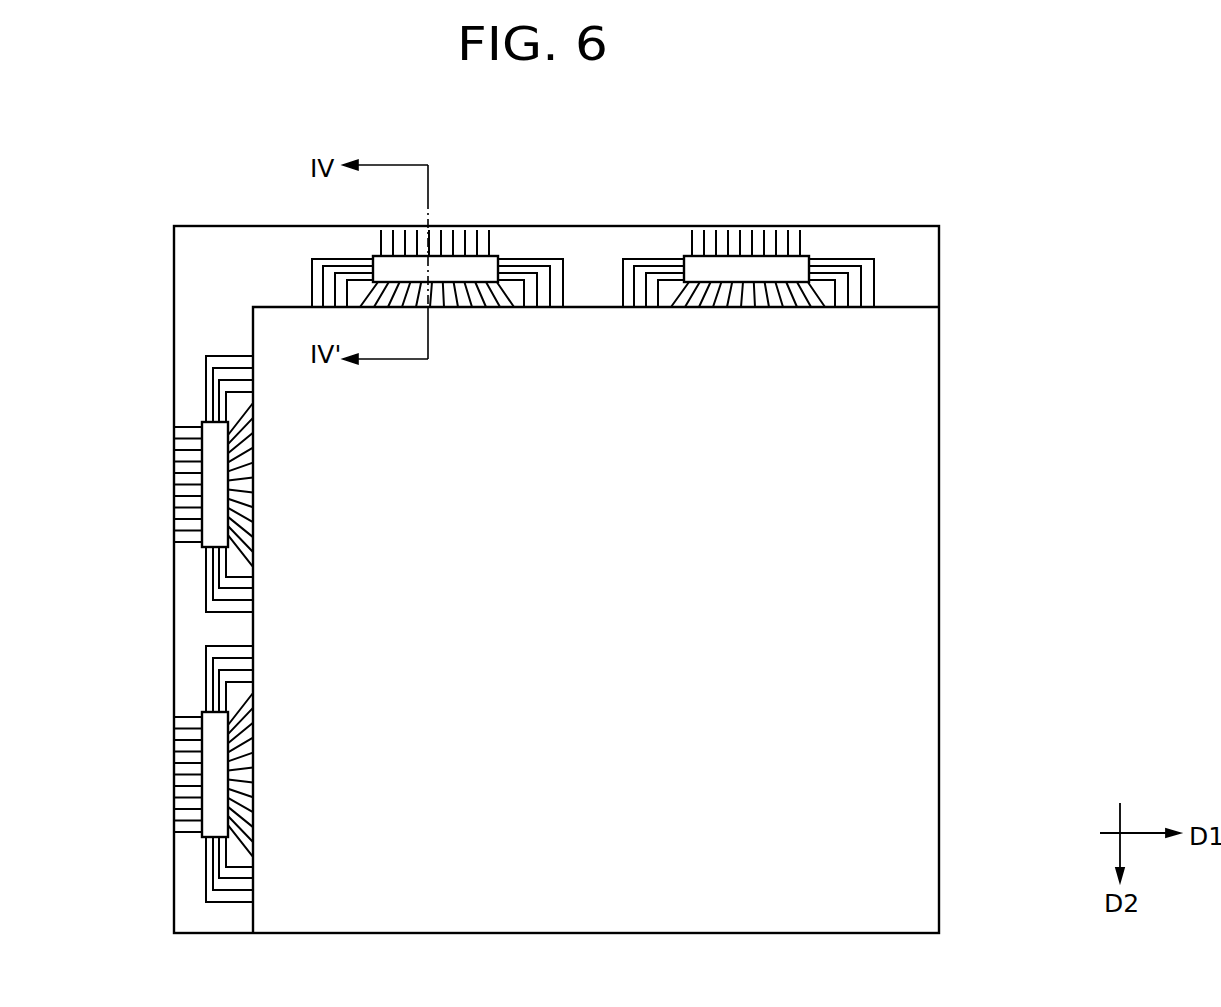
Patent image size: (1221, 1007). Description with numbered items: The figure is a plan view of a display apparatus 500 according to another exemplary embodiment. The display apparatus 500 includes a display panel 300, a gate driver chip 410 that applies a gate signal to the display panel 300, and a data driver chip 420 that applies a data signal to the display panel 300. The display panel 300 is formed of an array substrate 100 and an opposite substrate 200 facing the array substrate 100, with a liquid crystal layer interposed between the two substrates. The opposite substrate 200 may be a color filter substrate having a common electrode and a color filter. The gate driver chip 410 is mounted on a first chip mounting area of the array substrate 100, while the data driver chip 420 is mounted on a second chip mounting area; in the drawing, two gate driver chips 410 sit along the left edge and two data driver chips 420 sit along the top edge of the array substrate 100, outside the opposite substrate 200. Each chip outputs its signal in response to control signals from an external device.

The array substrate 100 is at (939, 258).
The opposite substrate 200 is at (923, 307).
The display panel 300 is at (1050, 246).
The gate driver chip 410 is at (207, 427).
The data driver chip 420 is at (494, 264).
The display apparatus 500 is at (490, 137).